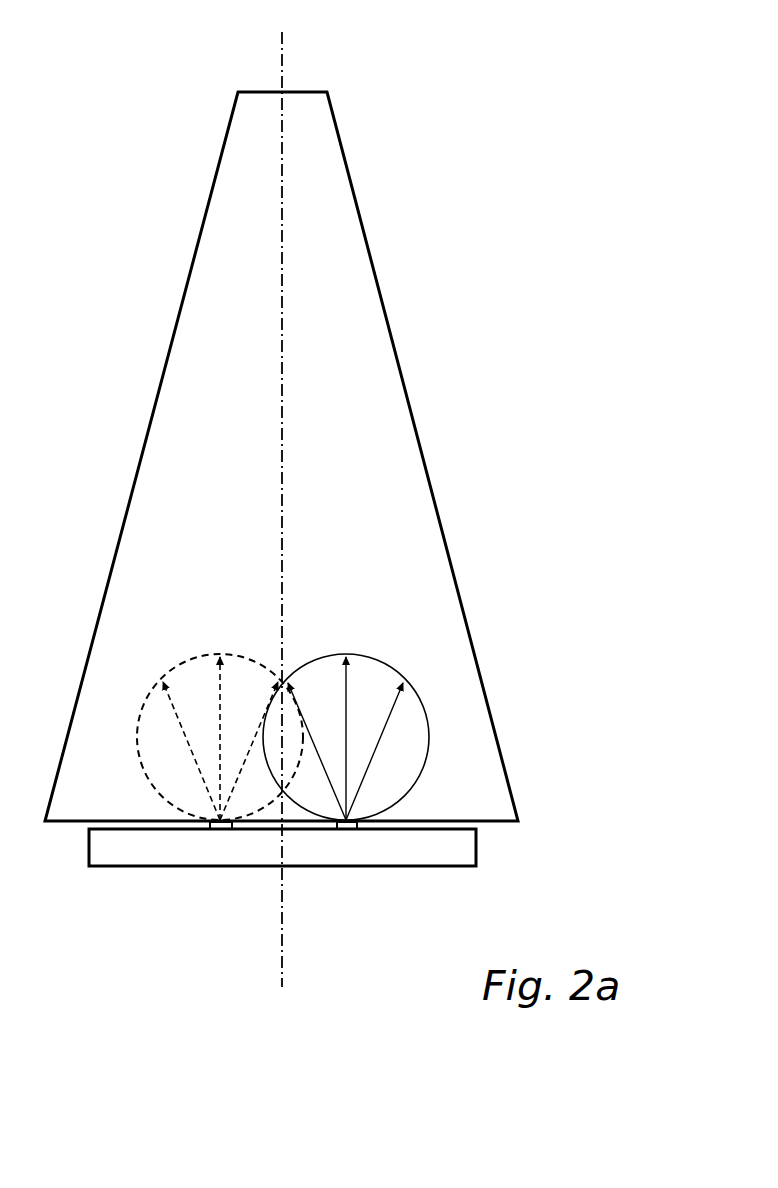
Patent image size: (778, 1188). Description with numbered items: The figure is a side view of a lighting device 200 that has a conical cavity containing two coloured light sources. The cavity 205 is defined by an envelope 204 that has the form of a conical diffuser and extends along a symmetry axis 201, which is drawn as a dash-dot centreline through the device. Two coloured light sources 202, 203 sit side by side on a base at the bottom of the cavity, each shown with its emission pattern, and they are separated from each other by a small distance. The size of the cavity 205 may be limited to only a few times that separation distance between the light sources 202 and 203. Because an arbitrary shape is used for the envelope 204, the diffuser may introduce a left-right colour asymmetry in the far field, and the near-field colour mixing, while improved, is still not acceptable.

The lighting device 200 is at (532, 247).
The symmetry axis 201 is at (282, 70).
The light source 202 is at (219, 828).
The light source 203 is at (344, 828).
The envelope 204 is at (418, 456).
The cavity 205 is at (338, 247).